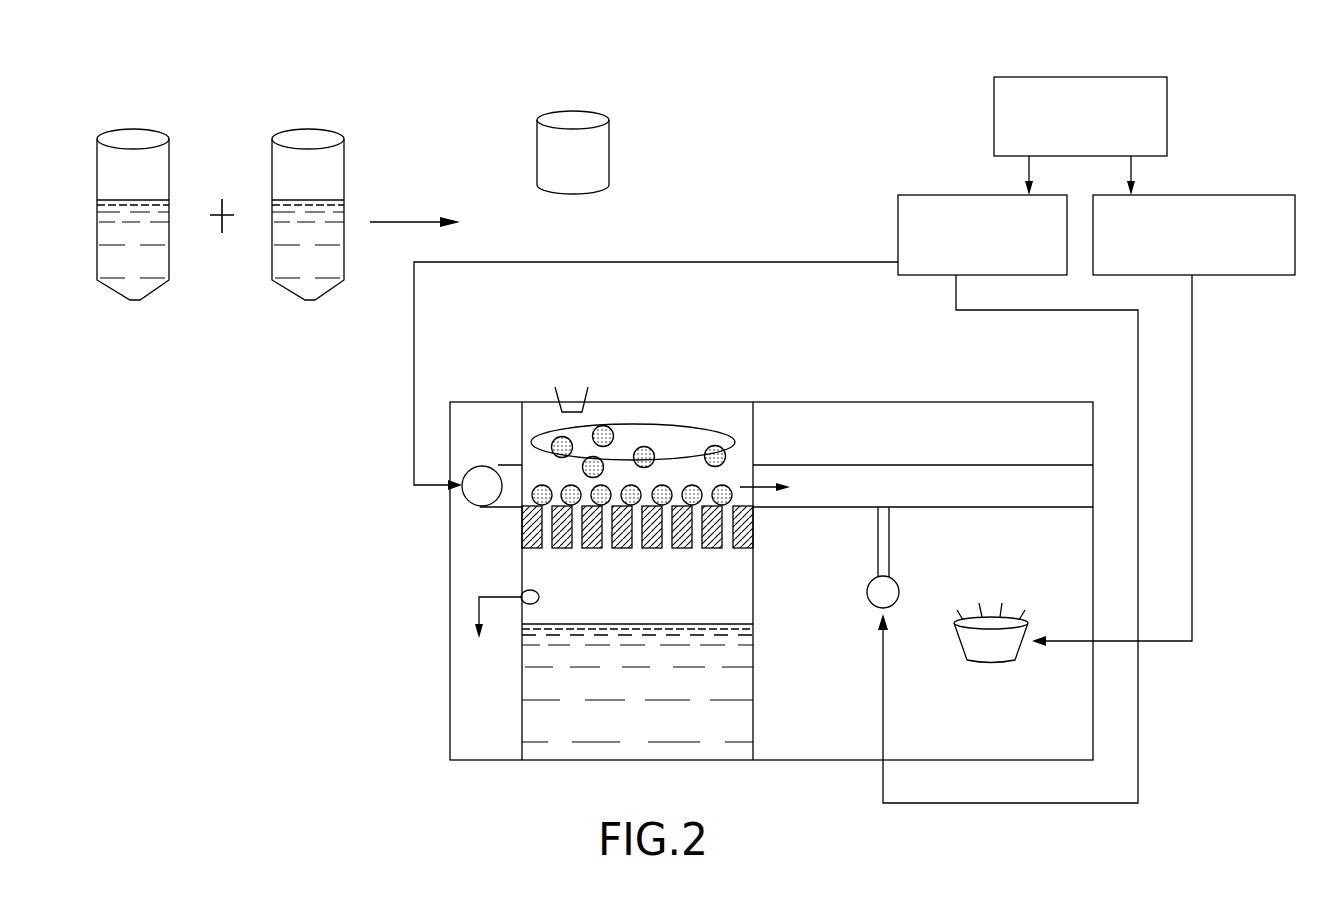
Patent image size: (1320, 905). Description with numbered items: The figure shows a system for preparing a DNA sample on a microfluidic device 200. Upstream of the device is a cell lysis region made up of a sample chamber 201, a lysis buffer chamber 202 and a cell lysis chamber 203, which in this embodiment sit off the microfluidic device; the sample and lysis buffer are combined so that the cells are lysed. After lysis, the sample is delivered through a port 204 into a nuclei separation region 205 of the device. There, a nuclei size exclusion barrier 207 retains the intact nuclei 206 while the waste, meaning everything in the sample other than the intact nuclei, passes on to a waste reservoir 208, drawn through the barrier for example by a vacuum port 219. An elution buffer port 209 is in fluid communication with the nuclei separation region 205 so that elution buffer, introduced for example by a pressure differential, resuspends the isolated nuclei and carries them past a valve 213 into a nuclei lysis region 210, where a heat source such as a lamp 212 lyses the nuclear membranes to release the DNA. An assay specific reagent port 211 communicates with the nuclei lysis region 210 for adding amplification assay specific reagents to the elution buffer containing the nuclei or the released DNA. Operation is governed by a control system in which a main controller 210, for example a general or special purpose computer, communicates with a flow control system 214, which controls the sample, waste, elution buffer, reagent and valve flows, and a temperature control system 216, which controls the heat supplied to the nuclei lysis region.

The microfluidic device 200 is at (935, 402).
The sample chamber 201 is at (170, 162).
The lysis buffer chamber 202 is at (345, 162).
The cell lysis chamber 203 is at (609, 155).
The port 204 is at (588, 392).
The nuclei separation region 205 is at (667, 483).
The intact nuclei 206 is at (742, 470).
The nuclei size exclusion barrier 207 is at (525, 542).
The waste reservoir 208 is at (523, 665).
The elution buffer port 209 is at (462, 489).
The nuclei lysis region / main controller 210 is at (1080, 77).
The assay specific reagent port 211 is at (890, 610).
The lamp 212 is at (992, 662).
The valve 213 is at (757, 490).
The flow control system 214 is at (928, 195).
The temperature control system 216 is at (1236, 195).
The vacuum port 219 is at (479, 612).